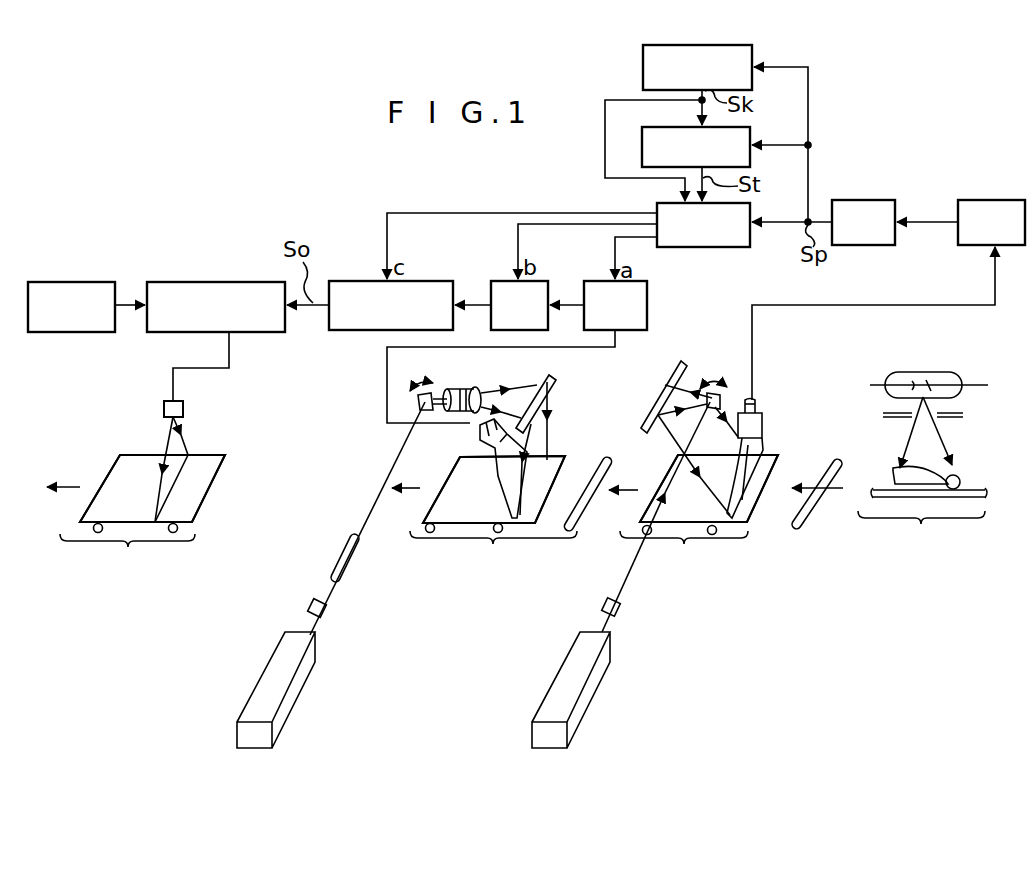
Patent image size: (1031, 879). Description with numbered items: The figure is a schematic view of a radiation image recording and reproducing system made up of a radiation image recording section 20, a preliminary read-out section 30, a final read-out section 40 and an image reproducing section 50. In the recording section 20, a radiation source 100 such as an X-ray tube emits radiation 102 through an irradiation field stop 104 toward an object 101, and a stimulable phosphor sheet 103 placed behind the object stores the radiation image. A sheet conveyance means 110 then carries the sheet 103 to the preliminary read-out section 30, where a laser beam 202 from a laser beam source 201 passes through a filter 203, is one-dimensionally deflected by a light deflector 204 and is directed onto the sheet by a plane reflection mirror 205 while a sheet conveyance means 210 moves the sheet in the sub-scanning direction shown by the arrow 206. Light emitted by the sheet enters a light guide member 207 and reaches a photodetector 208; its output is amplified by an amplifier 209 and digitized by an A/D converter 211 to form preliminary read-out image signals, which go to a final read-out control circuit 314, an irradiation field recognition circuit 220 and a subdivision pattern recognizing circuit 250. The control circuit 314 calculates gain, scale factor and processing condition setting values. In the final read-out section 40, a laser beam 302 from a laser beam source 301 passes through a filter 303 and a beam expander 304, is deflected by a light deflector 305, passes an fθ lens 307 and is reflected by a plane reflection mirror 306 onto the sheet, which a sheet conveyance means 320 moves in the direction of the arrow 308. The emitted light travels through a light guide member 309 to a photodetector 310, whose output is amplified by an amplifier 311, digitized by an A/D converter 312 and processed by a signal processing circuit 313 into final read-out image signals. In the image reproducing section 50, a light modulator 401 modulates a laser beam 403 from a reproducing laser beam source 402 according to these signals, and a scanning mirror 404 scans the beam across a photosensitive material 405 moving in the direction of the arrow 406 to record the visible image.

The subdivision pattern recognizing circuit 250 is at (643, 64).
The irradiation field recognition circuit 220 is at (674, 124).
The final read-out control circuit 314 is at (705, 247).
The A/D converter 211 is at (888, 200).
The amplifier 209 is at (1000, 200).
The reproducing laser beam source 402 is at (90, 280).
The light modulator 401 is at (217, 280).
The laser beam 403 is at (127, 307).
The scanning mirror 404 is at (185, 408).
The photosensitive material 405 is at (138, 465).
The arrow 406 is at (72, 487).
The image reproducing section 50 is at (142, 516).
The signal processing circuit 313 is at (338, 280).
The A/D converter 312 is at (501, 280).
The amplifier 311 is at (647, 306).
The light deflector 305 is at (442, 392).
The fθ lens 307 is at (478, 388).
The plane reflection mirror 306 is at (556, 387).
The light guide member 309 is at (535, 455).
The stimulable phosphor sheet 103 is at (561, 463).
The photodetector 310 is at (480, 440).
The arrow 308 is at (418, 488).
The final read-out section 40 is at (493, 515).
The sheet conveyance means 320 is at (501, 532).
The beam expander 304 is at (355, 566).
The filter 303 is at (327, 607).
The laser beam 302 is at (312, 625).
The laser beam source 301 is at (285, 718).
The plane reflection mirror 205 is at (663, 384).
The light deflector 204 is at (729, 390).
The photodetector 208 is at (760, 420).
The light guide member 207 is at (757, 450).
The arrow 206 is at (631, 487).
The preliminary read-out section 30 is at (699, 515).
The sheet conveyance means 210 is at (716, 534).
The sheet conveyance means 110 is at (822, 511).
The radiation source 100 is at (956, 360).
The radiation 102 is at (904, 422).
The irradiation field stop 104 is at (963, 417).
The object 101 is at (895, 468).
The radiation image recording section 20 is at (921, 536).
The filter 203 is at (620, 605).
The laser beam 202 is at (608, 623).
The laser beam source 201 is at (588, 700).